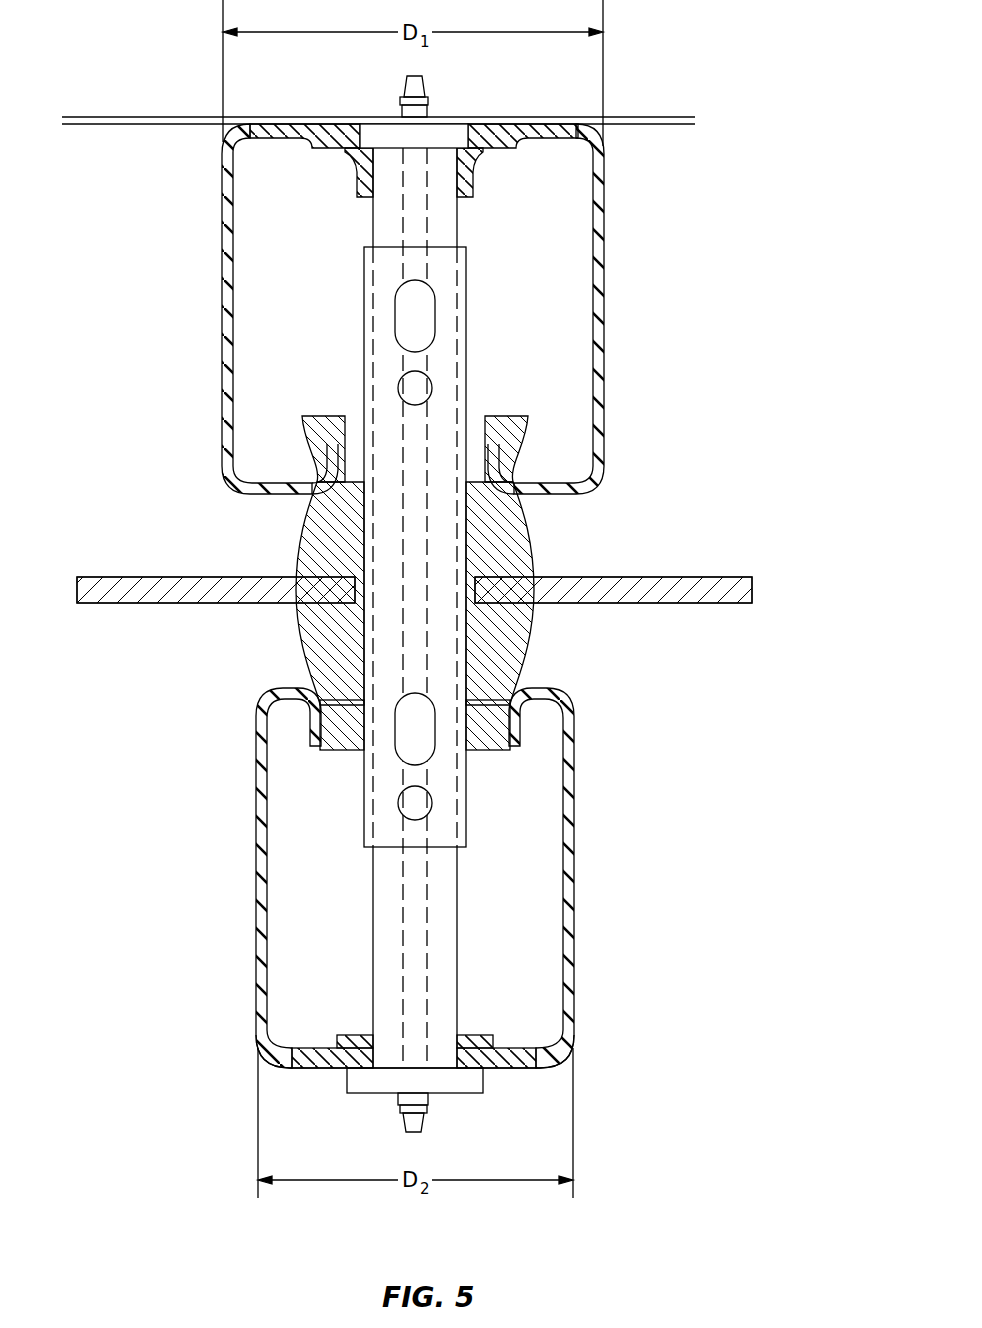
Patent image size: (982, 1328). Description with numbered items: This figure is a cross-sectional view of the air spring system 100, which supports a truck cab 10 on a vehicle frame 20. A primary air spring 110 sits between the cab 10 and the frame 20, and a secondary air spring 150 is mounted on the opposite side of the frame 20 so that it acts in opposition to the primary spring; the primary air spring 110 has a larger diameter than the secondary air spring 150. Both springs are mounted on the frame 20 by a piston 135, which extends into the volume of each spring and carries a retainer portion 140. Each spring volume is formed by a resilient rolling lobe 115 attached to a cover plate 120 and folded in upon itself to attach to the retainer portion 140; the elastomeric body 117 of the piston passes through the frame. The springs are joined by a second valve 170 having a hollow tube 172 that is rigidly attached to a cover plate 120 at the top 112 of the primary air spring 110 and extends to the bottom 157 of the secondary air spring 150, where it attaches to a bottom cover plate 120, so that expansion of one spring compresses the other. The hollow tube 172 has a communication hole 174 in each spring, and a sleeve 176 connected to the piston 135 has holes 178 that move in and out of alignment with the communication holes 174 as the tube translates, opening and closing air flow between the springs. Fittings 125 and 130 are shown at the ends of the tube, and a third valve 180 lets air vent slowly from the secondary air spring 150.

The truck cab 10 is at (178, 116).
The frame 20 is at (143, 590).
The air spring system 100 is at (765, 192).
The primary air spring 110 is at (645, 348).
The top 112 is at (500, 118).
The resilient rolling lobe 115 is at (222, 352).
The elastomeric body 117 is at (498, 570).
The cover plate 120 is at (333, 130).
The upper fitting 125 is at (412, 98).
The lower fitting 130 is at (430, 1120).
The piston 135 is at (290, 552).
The retainer portion 140 is at (498, 432).
The secondary air spring 150 is at (612, 864).
The bottom 157 is at (288, 1068).
The second valve 170 is at (503, 248).
The hollow tube 172 is at (457, 968).
The communication hole 174 is at (433, 390).
The sleeve 176 is at (467, 775).
The holes 178 is at (433, 306).
The third valve 180 is at (370, 1110).